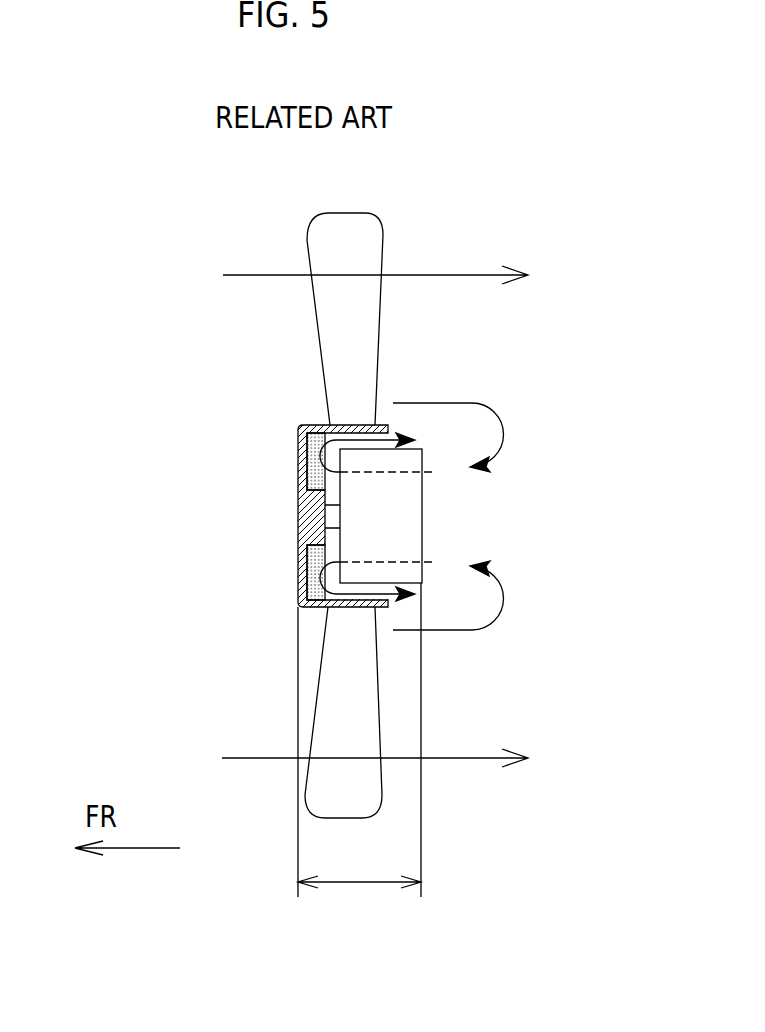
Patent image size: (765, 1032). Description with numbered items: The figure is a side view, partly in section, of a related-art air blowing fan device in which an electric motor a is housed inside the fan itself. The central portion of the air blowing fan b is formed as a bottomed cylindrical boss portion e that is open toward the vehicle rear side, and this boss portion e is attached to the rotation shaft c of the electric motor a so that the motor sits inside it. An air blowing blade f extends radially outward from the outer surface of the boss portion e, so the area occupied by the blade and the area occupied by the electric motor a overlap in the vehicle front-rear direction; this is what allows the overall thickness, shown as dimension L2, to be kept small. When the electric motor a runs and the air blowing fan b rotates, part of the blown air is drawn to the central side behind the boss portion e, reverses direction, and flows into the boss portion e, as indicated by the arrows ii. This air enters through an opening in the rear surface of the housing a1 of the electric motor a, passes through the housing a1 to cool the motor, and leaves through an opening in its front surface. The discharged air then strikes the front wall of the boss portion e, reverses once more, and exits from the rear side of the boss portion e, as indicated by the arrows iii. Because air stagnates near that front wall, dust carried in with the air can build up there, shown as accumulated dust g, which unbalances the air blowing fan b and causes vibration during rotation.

The air blowing fan b is at (355, 507).
The air blowing blade f is at (328, 253).
The arrows indicating air flowing into the boss portion ii is at (493, 407).
The arrows indicating air discharged from the boss portion iii is at (347, 423).
The boss portion e is at (298, 462).
The rotation shaft c is at (333, 517).
The accumulated dust g is at (313, 565).
The electric motor a is at (428, 516).
The housing a1 is at (441, 485).
The dimension L2 is at (359, 740).